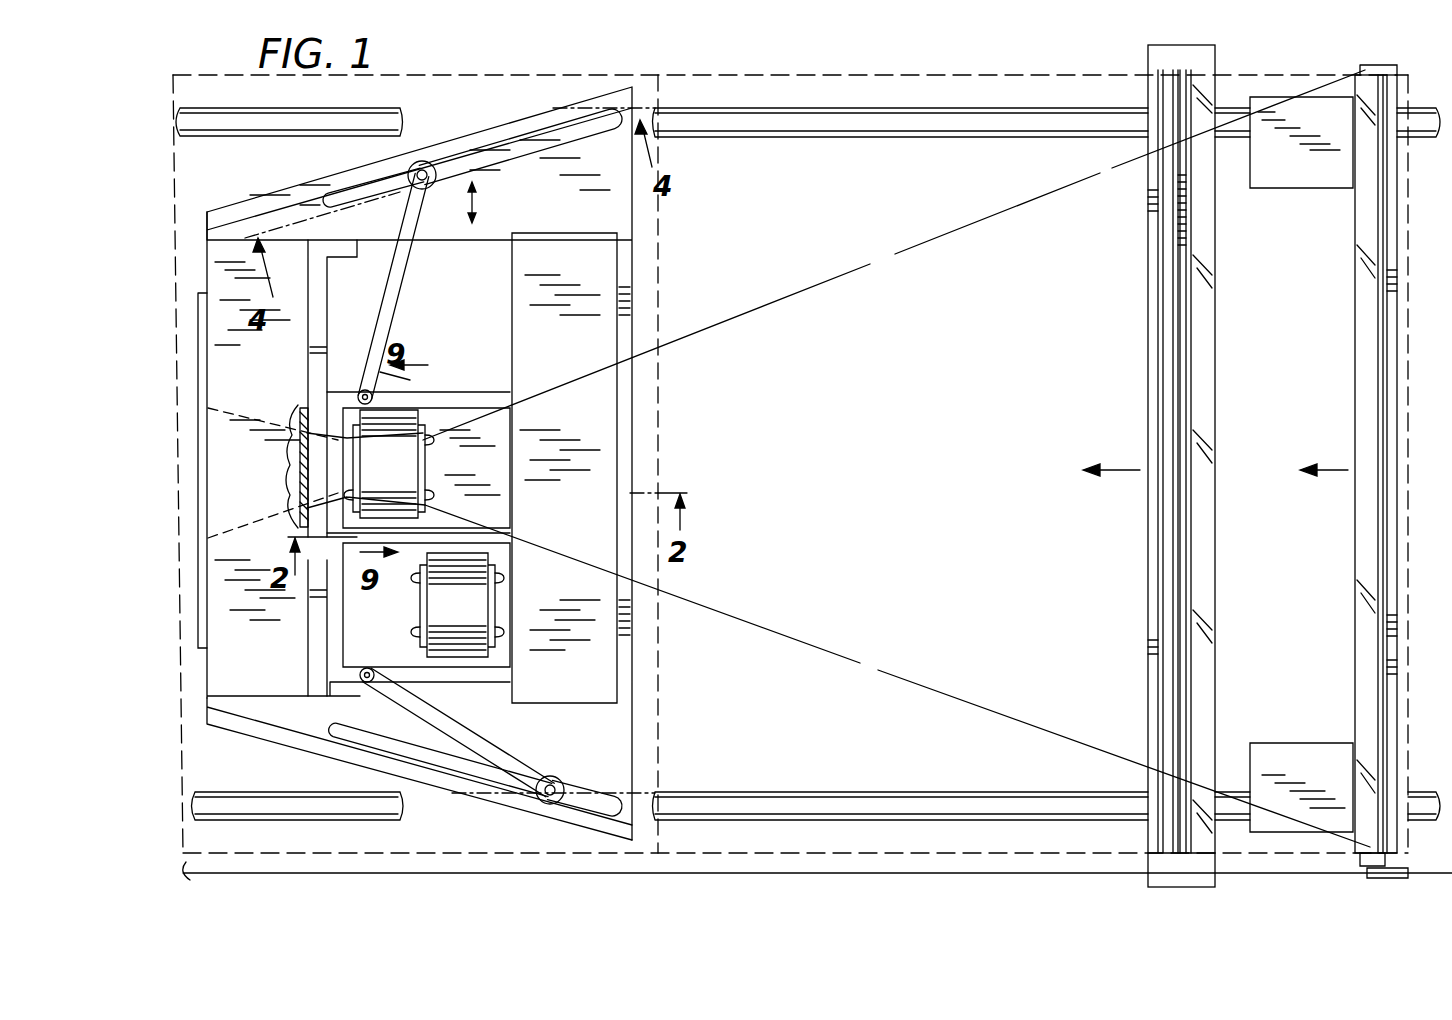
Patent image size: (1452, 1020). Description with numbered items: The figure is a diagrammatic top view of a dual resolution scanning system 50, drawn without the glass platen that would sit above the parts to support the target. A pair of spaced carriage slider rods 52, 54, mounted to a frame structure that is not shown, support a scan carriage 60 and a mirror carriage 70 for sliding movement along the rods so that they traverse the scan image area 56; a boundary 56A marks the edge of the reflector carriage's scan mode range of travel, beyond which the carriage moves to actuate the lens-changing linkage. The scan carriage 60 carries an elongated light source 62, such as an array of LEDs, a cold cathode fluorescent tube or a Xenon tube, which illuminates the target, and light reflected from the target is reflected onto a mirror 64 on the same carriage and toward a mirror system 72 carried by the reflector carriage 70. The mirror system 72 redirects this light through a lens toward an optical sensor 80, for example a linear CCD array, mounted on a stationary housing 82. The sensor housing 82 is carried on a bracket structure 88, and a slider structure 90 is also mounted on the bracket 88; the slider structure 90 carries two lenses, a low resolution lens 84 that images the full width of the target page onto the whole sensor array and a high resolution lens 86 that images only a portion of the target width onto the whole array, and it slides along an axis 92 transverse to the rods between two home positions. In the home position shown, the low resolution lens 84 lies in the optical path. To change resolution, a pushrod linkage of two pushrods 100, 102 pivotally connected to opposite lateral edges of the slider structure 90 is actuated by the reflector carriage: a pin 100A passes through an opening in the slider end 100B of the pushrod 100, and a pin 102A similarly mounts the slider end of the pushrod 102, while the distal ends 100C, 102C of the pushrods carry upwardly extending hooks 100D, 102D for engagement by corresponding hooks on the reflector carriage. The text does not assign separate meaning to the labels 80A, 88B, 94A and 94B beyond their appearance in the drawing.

The dual resolution scanning system 50 is at (906, 70).
The carriage slider rod 52 is at (722, 110).
The carriage slider rod 54 is at (790, 794).
The scan image area 56 is at (900, 855).
The boundary 56A is at (662, 422).
The scan carriage 60 is at (1148, 58).
The elongated light source 62 is at (1158, 372).
The mirror 64 is at (1215, 232).
The mirror carriage 70 is at (1395, 67).
The mirror system 72 is at (1358, 372).
The optical sensor 80 is at (205, 395).
The upper carriage bar 80A is at (360, 172).
The stationary housing 82 is at (228, 300).
The low resolution lens 84 is at (405, 452).
The high resolution lens 86 is at (480, 594).
The bracket structure 88 is at (625, 212).
The lower carriage bar 88B is at (366, 760).
The slider structure 90 is at (338, 200).
The axis 92 is at (478, 203).
The upper cable 94A is at (740, 318).
The lower cable 94B is at (738, 616).
The pushrod 100 is at (406, 262).
The pin 100A is at (358, 396).
The slider end 100B is at (410, 378).
The distal end 100C is at (432, 168).
The hook 100D is at (422, 161).
The pushrod 102 is at (402, 700).
The pin 102A is at (367, 668).
The distal end 102C is at (600, 778).
The hook 102D is at (548, 806).